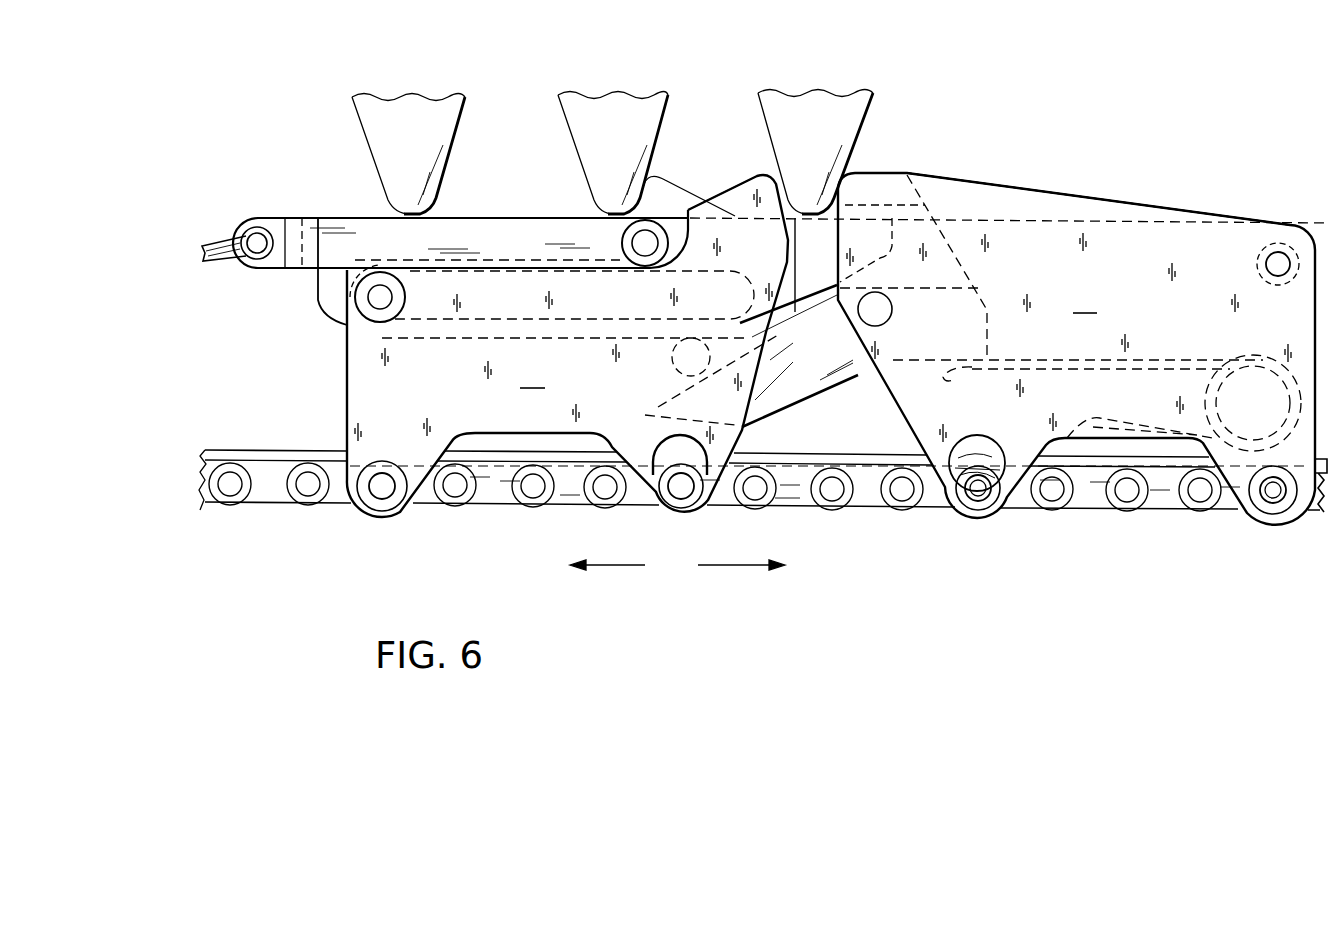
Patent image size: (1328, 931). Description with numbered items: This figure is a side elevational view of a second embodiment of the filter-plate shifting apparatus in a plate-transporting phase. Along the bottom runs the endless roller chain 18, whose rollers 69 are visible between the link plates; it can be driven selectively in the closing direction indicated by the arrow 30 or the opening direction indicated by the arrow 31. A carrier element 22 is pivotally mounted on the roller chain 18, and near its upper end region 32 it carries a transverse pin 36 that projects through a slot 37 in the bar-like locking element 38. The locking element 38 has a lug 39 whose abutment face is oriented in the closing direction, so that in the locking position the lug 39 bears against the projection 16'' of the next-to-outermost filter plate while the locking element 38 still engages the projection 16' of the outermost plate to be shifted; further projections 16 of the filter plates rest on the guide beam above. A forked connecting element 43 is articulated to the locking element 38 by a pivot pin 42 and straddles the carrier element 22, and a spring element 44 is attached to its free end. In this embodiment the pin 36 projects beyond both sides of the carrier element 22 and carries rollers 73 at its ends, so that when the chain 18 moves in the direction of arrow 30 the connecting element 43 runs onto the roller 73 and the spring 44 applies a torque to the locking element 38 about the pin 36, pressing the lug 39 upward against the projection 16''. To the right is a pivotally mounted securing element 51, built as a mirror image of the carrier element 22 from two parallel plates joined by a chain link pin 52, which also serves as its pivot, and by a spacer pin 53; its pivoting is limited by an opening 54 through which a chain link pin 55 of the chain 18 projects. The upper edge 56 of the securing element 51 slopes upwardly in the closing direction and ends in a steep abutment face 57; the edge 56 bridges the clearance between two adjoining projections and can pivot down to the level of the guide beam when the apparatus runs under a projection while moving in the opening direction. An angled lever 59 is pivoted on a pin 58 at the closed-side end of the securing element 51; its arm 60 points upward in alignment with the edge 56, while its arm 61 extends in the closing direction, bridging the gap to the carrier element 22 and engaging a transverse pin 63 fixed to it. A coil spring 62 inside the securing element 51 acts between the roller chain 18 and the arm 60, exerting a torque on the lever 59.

The projections 16 is at (408, 128).
The projection of the next-to-the-outermost filter plate 16'' is at (613, 128).
The projection of the outermost filter plate 16' is at (815, 128).
The roller chain 18 is at (325, 497).
The carrier element 22 is at (567, 346).
The arrow 30 is at (630, 572).
The arrow 31 is at (718, 572).
The upper projection 32 is at (745, 180).
The transverse pin 36 is at (370, 298).
The slot 37 is at (492, 287).
The locking element 38 is at (457, 213).
The lug 39 is at (658, 187).
The pivot pin 42 is at (638, 243).
The forked connecting element 43 is at (332, 240).
The spring element 44 is at (214, 252).
The securing element 51 is at (1009, 349).
The chain link pin 52 is at (1278, 500).
The spacer pin 53 is at (1278, 252).
The opening 54 is at (977, 445).
The chain link pin 55 is at (985, 505).
The upper edge 56 is at (1027, 190).
The abutment face 57 is at (847, 187).
The pin 58 is at (893, 308).
The angled lever 59 is at (833, 395).
The arm 60 is at (897, 178).
The arm 61 is at (668, 400).
The coil spring 62 is at (1137, 363).
The transverse pin 63 is at (697, 357).
The chain roller 69 is at (395, 497).
The rollers 73 is at (383, 310).